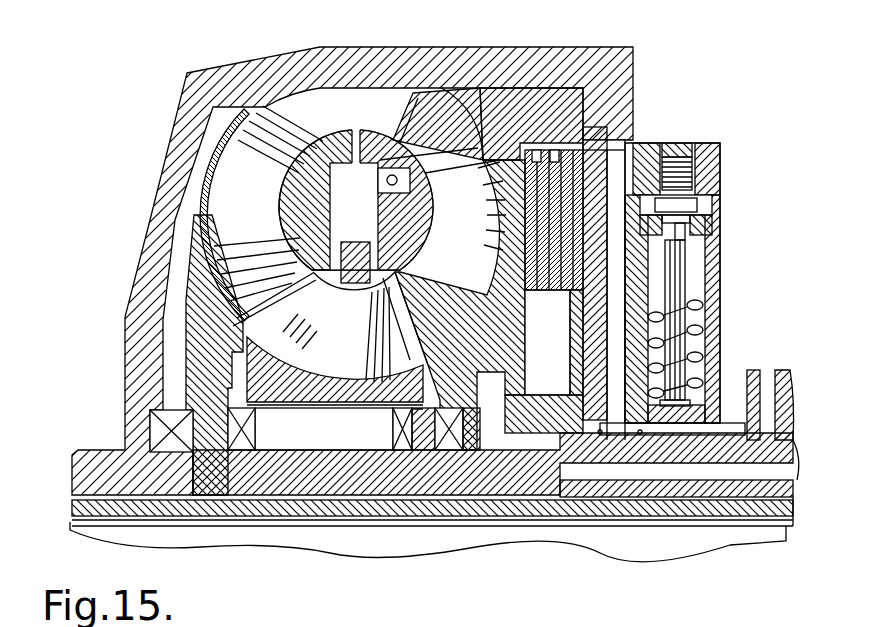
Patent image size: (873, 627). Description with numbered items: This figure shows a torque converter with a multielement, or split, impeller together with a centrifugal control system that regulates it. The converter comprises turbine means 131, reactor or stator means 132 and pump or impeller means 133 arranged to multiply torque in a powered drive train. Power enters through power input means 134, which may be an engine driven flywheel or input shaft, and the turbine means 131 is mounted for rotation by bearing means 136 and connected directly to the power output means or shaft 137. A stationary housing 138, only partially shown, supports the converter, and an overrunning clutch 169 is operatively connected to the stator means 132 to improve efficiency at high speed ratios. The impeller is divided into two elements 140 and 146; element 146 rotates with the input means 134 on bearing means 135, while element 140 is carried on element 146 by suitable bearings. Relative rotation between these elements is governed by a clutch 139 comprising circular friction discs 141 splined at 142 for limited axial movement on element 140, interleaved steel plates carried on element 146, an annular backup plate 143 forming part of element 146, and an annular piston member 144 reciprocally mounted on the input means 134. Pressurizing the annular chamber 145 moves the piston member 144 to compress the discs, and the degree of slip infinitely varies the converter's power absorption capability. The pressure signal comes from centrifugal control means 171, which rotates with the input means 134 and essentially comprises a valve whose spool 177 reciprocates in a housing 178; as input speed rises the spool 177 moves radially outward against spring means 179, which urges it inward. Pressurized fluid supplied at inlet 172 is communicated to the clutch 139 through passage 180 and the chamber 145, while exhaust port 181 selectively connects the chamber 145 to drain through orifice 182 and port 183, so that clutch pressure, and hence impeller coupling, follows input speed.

The turbine means 131 is at (228, 237).
The reactor or stator means 132 is at (245, 368).
The pump or impeller means 133 is at (480, 130).
The power input means 134 is at (262, 64).
The bearing means 135 is at (420, 392).
The bearing means 136 is at (147, 432).
The power output means or shaft 137 is at (782, 507).
The stationary housing 138 is at (378, 487).
The clutch 139 is at (555, 125).
The impeller element 140 is at (455, 154).
The circular friction discs 141 is at (537, 197).
The spline 142 is at (535, 170).
The annular backup plate 143 is at (503, 306).
The annular piston member 144 is at (575, 178).
The annular chamber 145 is at (620, 217).
The impeller element 146 is at (430, 270).
The overrunning clutch 169 is at (291, 462).
The centrifugal control means 171 is at (722, 75).
The inlet 172 is at (768, 408).
The spool 177 is at (683, 290).
The housing 178 is at (715, 330).
The spring means 179 is at (707, 367).
The passage 180 is at (613, 420).
The exhaust port 181 is at (712, 210).
The orifice 182 is at (690, 192).
The port 183 is at (702, 230).